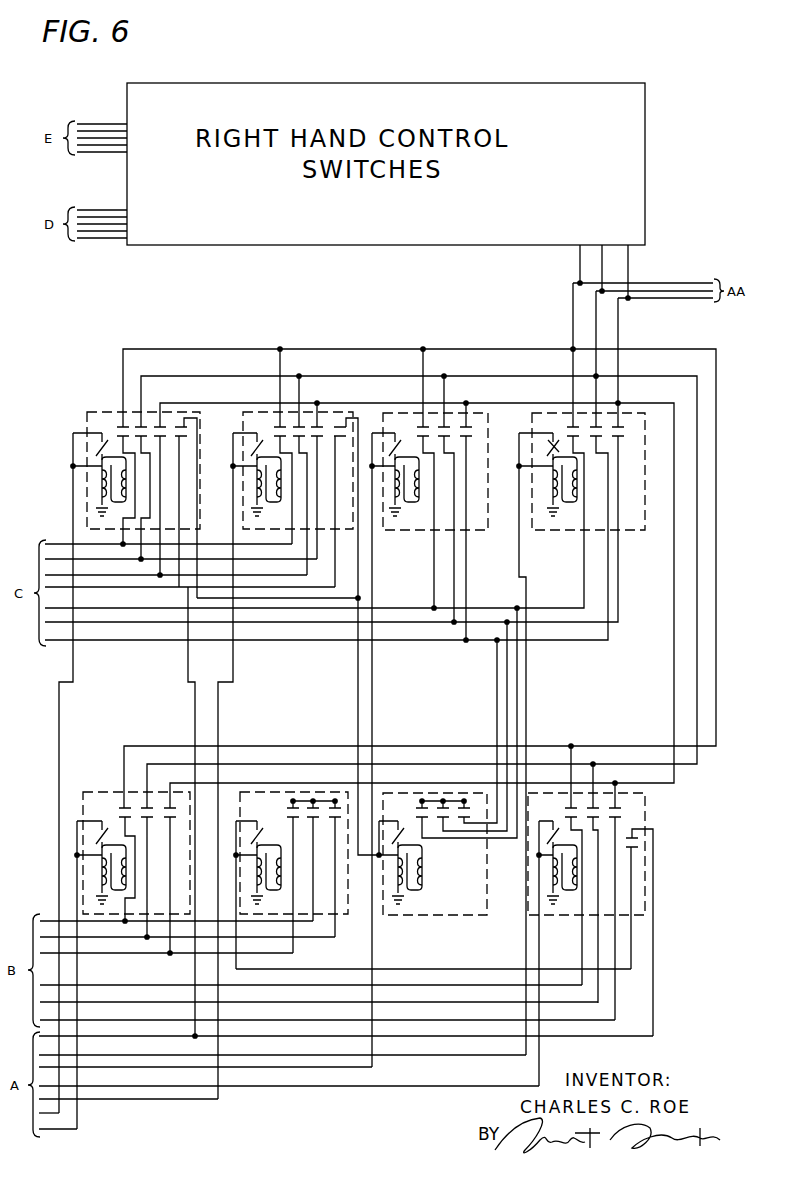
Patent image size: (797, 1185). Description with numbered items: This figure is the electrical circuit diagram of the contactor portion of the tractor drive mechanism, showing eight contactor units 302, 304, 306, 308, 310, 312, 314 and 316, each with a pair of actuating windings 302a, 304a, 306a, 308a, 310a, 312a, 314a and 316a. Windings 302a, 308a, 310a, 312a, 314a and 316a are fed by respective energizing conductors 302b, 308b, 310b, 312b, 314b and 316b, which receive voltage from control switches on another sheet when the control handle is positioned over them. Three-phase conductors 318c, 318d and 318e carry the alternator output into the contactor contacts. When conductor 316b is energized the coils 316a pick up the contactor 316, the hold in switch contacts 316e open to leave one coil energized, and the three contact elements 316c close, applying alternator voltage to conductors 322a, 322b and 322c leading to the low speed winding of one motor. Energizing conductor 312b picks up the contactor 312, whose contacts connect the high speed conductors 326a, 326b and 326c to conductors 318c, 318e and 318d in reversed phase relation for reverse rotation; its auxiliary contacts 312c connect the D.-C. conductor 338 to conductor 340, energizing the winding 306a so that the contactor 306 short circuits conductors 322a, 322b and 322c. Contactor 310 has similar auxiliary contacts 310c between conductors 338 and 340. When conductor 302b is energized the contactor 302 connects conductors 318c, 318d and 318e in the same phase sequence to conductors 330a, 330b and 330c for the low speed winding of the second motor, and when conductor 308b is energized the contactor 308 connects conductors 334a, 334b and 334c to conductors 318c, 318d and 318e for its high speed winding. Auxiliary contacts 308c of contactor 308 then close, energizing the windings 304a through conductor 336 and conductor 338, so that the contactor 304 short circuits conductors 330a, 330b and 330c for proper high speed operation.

The contactor unit 302 is at (88, 792).
The actuating windings 302a is at (113, 846).
The energizing conductor 302b is at (80, 1122).
The contactor unit 304 is at (344, 904).
The actuating windings 304a is at (270, 846).
The contactor unit 306 is at (415, 914).
The actuating winding 306a is at (411, 848).
The contactor unit 308 is at (645, 806).
The actuating windings 308a is at (562, 848).
The energizing conductor 308b is at (297, 1087).
The auxiliary contacts 308c is at (640, 846).
The contactor unit 310 is at (87, 423).
The actuating windings 310a is at (112, 489).
The energizing conductor 310b is at (50, 1114).
The auxiliary contacts 310c is at (189, 437).
The contactor unit 312 is at (249, 412).
The actuating windings 312a is at (268, 489).
The energizing conductor 312b is at (189, 1100).
The auxiliary contacts 312c is at (338, 432).
The contactor unit 314 is at (466, 531).
The actuating windings 314a is at (406, 492).
The energizing conductor 314b is at (373, 1063).
The contactor unit 316 is at (644, 531).
The actuating windings 316a is at (561, 492).
The energizing conductor 316b is at (447, 1055).
The contact elements 316c is at (618, 428).
The hold in switch contacts 316e is at (552, 447).
The conductor 318c is at (132, 348).
The conductor 318d is at (156, 375).
The conductor 318e is at (170, 402).
The conductor 322a is at (584, 568).
The conductor 322b is at (619, 584).
The conductor 322c is at (609, 567).
The high speed conductor 326a is at (283, 551).
The high speed conductor 326b is at (293, 565).
The high speed conductor 326c is at (294, 579).
The conductor 330a is at (95, 922).
The conductor 330b is at (100, 938).
The conductor 330c is at (106, 954).
The conductor 334a is at (110, 986).
The conductor 334b is at (110, 1003).
The conductor 334c is at (112, 1021).
The conductor 336 is at (463, 969).
The conductor 338 is at (186, 671).
The conductor 340 is at (358, 670).